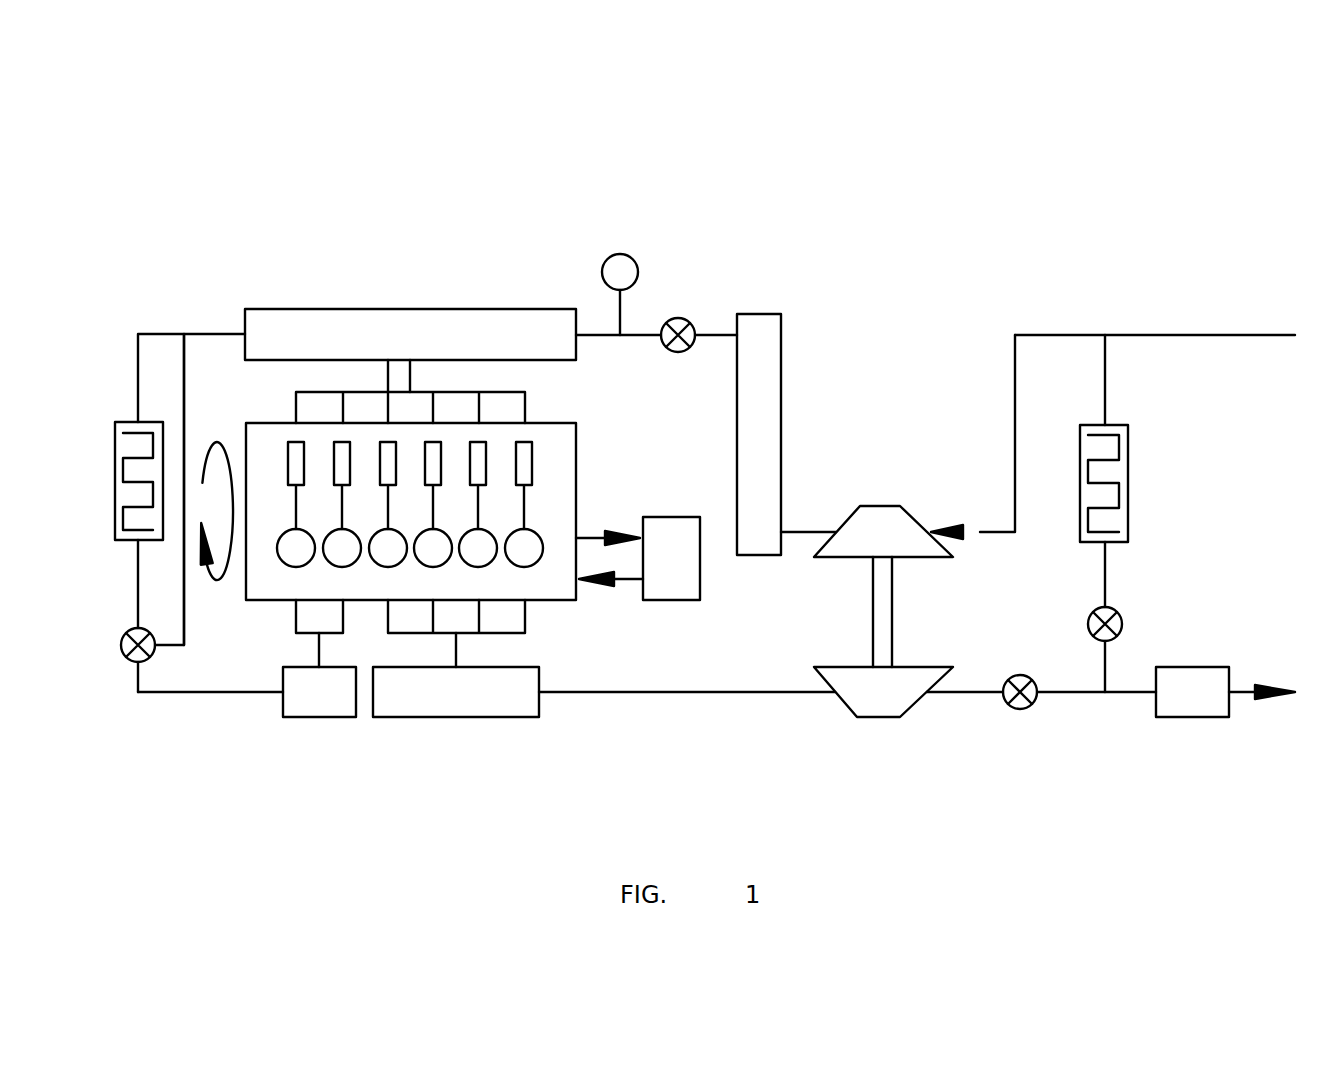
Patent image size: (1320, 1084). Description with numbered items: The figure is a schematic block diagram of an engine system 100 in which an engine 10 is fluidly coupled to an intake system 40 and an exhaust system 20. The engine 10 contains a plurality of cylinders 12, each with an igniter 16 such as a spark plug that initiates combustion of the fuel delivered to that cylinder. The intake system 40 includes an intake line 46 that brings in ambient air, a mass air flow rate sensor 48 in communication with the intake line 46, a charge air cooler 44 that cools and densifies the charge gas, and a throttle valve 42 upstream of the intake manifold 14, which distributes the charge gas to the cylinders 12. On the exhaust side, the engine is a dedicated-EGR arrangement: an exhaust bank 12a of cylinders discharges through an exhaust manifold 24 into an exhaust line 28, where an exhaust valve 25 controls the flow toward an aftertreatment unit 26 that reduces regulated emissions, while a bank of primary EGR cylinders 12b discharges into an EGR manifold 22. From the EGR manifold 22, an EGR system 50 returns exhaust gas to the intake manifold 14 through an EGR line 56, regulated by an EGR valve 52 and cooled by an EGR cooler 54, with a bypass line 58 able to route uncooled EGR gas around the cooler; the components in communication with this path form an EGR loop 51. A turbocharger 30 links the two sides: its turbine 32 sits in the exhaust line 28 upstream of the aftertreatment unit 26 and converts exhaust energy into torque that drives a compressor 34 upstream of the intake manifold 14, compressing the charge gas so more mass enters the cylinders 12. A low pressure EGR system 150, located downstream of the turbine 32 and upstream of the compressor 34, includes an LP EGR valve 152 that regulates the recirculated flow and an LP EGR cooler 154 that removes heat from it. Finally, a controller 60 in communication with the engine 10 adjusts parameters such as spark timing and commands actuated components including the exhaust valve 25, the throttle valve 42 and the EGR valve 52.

The engine 10 is at (437, 474).
The cylinders 12 is at (538, 535).
The exhaust bank 12a is at (615, 630).
The primary EGR cylinders 12b is at (228, 625).
The intake manifold 14 is at (285, 309).
The igniter 16 is at (387, 442).
The exhaust system 20 is at (453, 757).
The EGR manifold 22 is at (320, 717).
The exhaust manifold 24 is at (455, 717).
The exhaust valve 25 is at (1023, 708).
The aftertreatment unit 26 is at (1192, 717).
The exhaust line 28 is at (653, 692).
The turbocharger 30 is at (930, 624).
The turbine 32 is at (880, 717).
The compressor 34 is at (880, 506).
The intake system 40 is at (682, 352).
The throttle valve 42 is at (684, 320).
The charge air cooler 44 is at (760, 314).
The intake line 46 is at (1185, 335).
The mass air flow rate sensor 48 is at (606, 258).
The EGR system 50 is at (184, 488).
The EGR loop 51 is at (215, 442).
The EGR valve 52 is at (129, 660).
The EGR cooler 54 is at (116, 422).
The EGR line 56 is at (197, 694).
The bypass line 58 is at (183, 368).
The controller 60 is at (701, 576).
The engine system 100 is at (1092, 220).
The low pressure EGR system 150 is at (1180, 513).
The LP EGR valve 152 is at (1121, 626).
The LP EGR cooler 154 is at (1128, 482).